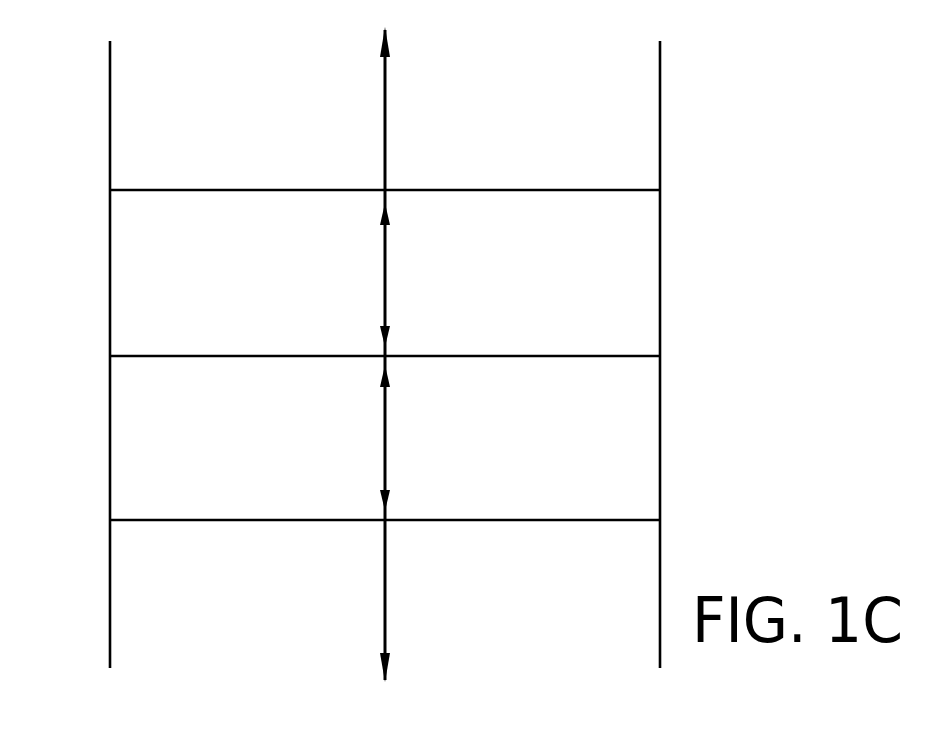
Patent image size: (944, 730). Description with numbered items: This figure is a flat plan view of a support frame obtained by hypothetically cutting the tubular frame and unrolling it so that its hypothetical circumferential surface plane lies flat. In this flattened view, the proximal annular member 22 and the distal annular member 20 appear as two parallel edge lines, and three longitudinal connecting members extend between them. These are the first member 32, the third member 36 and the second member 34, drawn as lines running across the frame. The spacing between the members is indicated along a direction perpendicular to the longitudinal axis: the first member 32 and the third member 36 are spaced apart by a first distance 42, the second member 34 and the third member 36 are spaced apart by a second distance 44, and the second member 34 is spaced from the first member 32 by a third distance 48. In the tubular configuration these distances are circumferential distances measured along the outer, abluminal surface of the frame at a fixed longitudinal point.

The distal annular member 20 is at (110, 98).
The proximal annular member 22 is at (660, 107).
The first member 32 is at (255, 190).
The third member 36 is at (270, 356).
The second member 34 is at (247, 520).
The third distance 48 is at (390, 107).
The first distance 42 is at (390, 271).
The second distance 44 is at (390, 438).